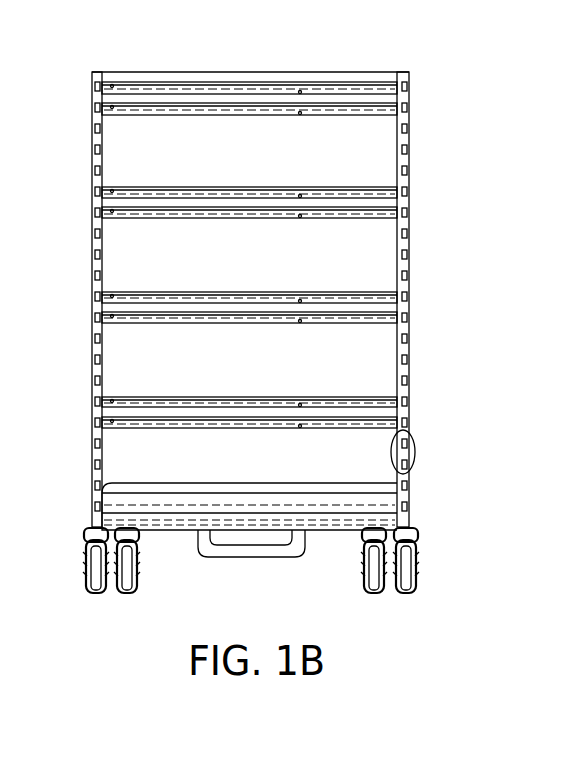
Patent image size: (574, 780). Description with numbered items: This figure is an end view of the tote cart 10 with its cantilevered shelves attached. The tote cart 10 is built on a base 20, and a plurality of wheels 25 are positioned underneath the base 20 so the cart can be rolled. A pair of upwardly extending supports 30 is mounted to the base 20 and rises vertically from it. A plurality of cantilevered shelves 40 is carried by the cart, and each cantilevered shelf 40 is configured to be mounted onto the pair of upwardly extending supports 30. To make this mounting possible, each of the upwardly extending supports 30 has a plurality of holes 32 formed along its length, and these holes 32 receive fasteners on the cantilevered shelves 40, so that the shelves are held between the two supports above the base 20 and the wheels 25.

The tote cart 10 is at (417, 45).
The base 20 is at (318, 532).
The wheels 25 is at (372, 593).
The upwardly extending supports 30 is at (92, 152).
The holes 32 is at (415, 452).
The cantilevered shelves 40 is at (338, 186).